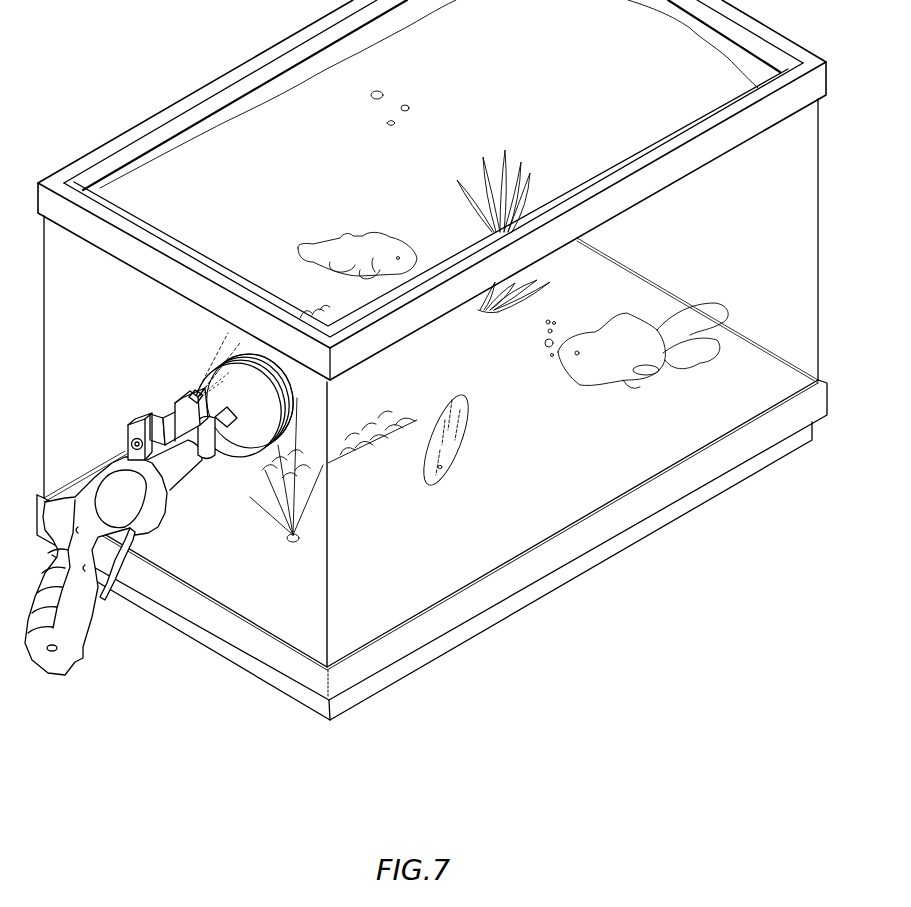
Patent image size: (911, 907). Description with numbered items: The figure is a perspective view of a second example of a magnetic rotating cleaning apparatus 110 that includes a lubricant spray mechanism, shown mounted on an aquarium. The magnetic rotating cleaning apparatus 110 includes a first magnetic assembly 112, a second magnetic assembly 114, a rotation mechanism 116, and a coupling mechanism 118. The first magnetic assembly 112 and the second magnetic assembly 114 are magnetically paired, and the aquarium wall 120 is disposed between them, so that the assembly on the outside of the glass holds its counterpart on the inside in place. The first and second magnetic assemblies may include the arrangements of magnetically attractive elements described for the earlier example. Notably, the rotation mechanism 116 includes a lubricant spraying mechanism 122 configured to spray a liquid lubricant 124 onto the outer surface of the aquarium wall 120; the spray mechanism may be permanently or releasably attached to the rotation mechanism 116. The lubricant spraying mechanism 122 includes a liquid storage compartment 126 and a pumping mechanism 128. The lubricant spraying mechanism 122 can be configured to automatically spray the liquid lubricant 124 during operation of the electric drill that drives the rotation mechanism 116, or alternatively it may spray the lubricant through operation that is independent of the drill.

The magnetic rotating cleaning apparatus 110 is at (85, 381).
The first magnetic assembly 112 is at (253, 443).
The second magnetic assembly 114 is at (283, 396).
The rotation mechanism 116 is at (85, 665).
The coupling mechanism 118 is at (222, 463).
The aquarium wall 120 is at (286, 604).
The lubricant spraying mechanism 122 is at (145, 423).
The liquid lubricant 124 is at (198, 391).
The liquid storage compartment 126 is at (131, 445).
The pumping mechanism 128 is at (177, 407).